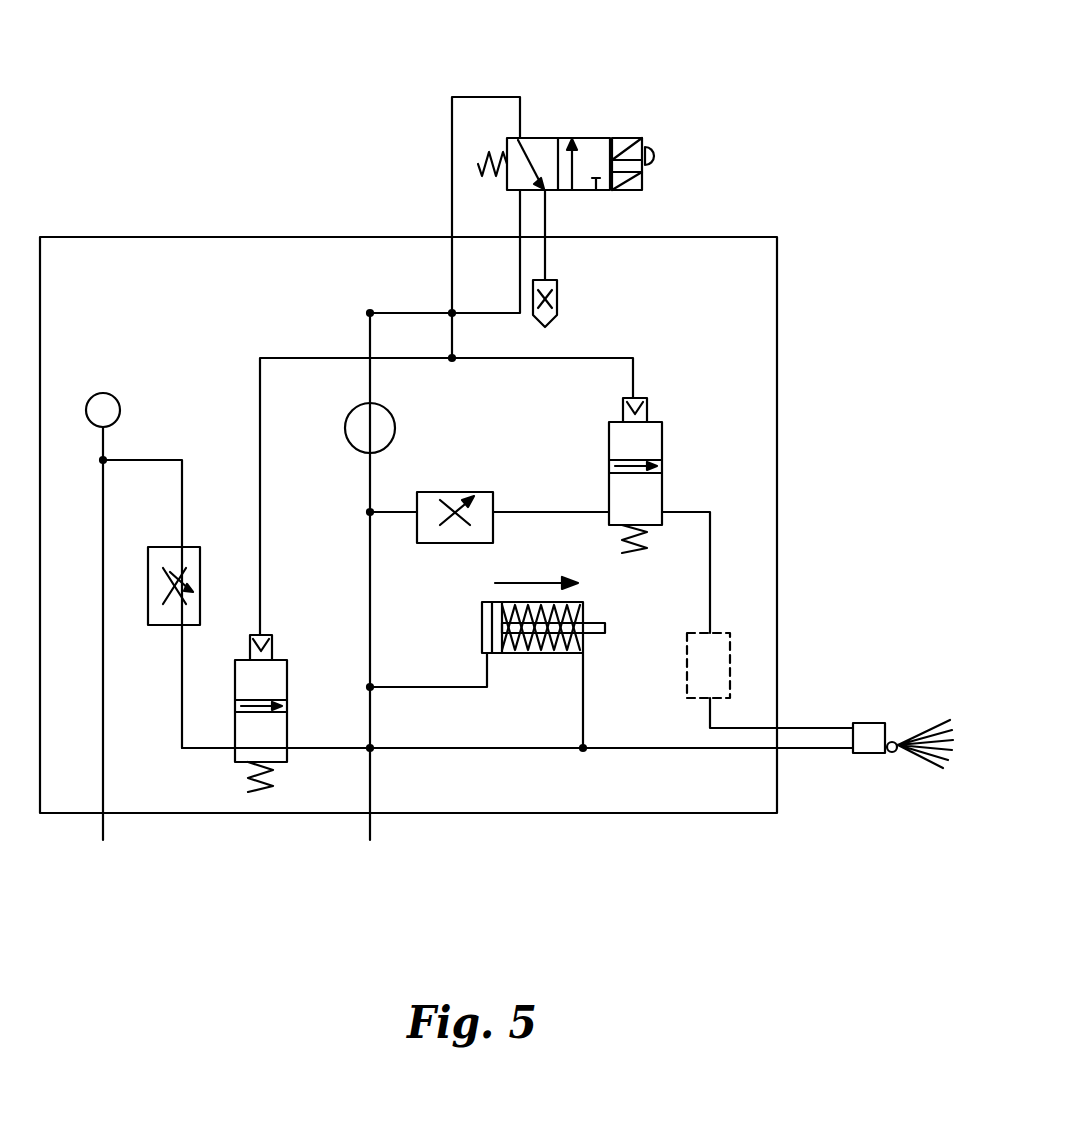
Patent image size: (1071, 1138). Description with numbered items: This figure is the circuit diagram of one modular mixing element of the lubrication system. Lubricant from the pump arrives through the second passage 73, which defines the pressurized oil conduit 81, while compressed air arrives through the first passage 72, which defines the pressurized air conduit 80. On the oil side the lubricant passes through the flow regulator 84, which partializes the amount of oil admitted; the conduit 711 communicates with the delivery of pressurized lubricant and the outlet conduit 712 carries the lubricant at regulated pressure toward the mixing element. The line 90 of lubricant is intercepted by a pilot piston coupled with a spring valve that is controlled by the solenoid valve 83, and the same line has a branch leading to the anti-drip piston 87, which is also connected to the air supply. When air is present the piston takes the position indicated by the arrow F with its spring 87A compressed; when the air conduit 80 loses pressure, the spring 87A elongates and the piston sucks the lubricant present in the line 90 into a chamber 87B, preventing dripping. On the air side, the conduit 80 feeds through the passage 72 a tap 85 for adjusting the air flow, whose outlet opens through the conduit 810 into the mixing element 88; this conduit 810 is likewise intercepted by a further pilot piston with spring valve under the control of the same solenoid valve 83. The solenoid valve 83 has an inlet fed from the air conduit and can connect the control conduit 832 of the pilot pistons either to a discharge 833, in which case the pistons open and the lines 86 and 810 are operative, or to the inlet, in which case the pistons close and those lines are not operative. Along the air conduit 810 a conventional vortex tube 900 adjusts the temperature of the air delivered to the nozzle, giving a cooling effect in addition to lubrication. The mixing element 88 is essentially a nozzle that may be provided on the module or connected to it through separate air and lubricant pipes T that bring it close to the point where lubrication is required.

The first passage 72 is at (396, 420).
The second passage 73 is at (119, 402).
The pressurized air conduit 80 is at (340, 441).
The pressurized oil conduit 81 is at (90, 397).
The solenoid valve 83 is at (580, 122).
The flow regulator 84 is at (147, 640).
The tap 85 is at (426, 558).
The line 86 is at (433, 752).
The anti-drip piston 87 is at (521, 671).
The spring 87A is at (576, 612).
The chamber 87B is at (567, 650).
The mixing element 88 is at (900, 765).
The line of lubricant 90 is at (172, 718).
The conduit 711 is at (181, 547).
The outlet conduit 712 is at (190, 628).
The conduit 810 is at (550, 509).
The control conduit 832 is at (521, 120).
The discharge 833 is at (548, 220).
The vortex tube 900 is at (735, 668).
The separate air and lubricant pipes T is at (818, 748).
The arrow F is at (512, 583).